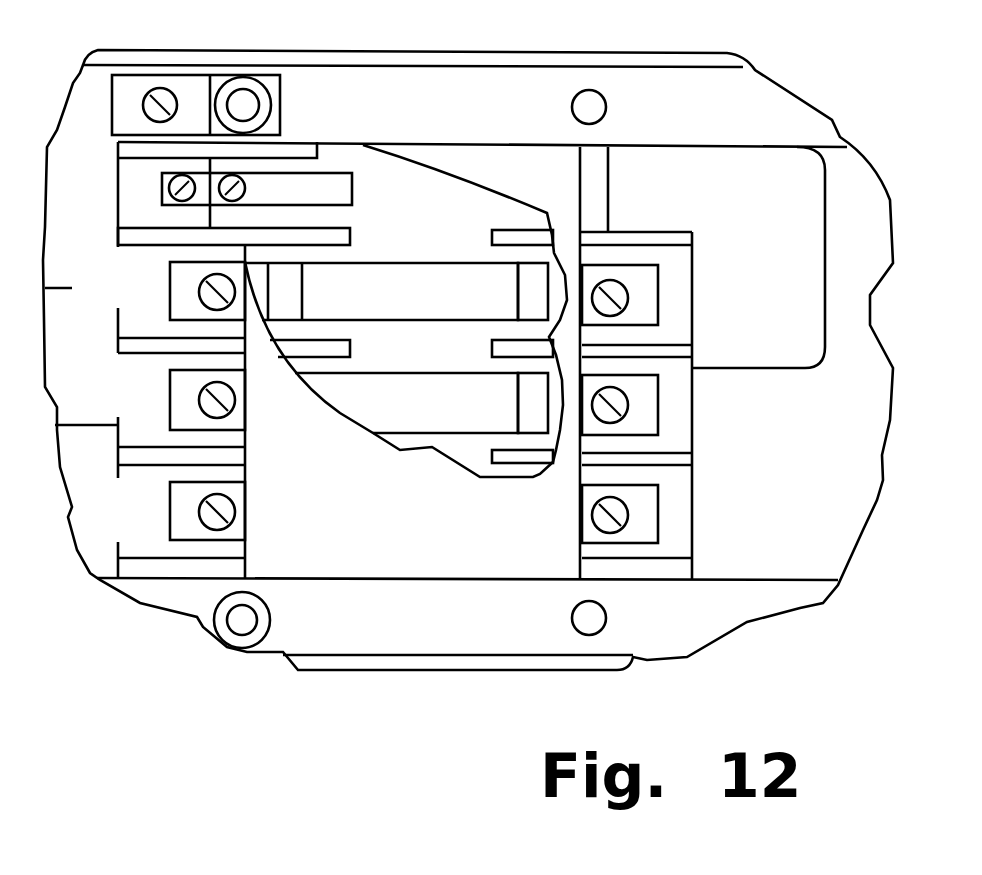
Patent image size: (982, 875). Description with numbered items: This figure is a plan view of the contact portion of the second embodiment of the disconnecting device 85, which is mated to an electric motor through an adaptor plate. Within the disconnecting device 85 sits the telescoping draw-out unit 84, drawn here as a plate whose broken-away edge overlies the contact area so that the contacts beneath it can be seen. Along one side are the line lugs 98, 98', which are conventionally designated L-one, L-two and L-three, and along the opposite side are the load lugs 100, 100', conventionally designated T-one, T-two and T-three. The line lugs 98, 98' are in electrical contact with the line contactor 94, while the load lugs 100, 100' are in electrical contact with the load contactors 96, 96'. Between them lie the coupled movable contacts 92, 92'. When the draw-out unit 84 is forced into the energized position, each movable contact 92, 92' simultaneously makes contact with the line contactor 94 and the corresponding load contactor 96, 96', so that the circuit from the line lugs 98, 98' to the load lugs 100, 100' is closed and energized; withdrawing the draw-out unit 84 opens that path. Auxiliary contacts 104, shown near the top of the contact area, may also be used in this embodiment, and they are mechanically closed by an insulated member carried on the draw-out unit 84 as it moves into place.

The draw-out unit 84 is at (338, 511).
The disconnecting device 85 is at (470, 52).
The movable contact 92 is at (381, 272).
The movable contact 92' is at (406, 383).
The line contactor 94 is at (303, 297).
The load contactor 96 is at (499, 291).
The load contactor 96' is at (494, 403).
The line lug 98 is at (167, 291).
The line lug 98' is at (167, 453).
The load lug 100 is at (671, 291).
The load lug 100' is at (681, 468).
The auxiliary contacts 104 is at (352, 190).